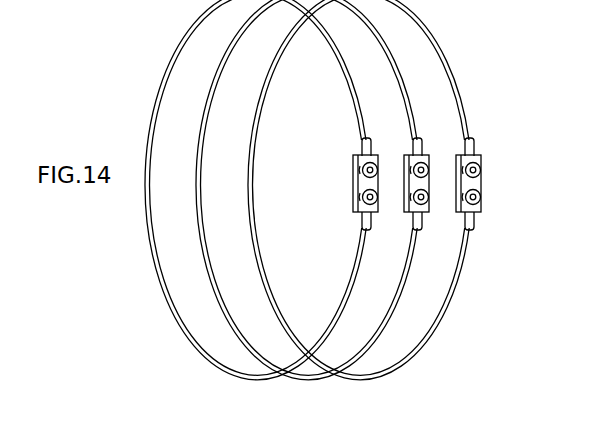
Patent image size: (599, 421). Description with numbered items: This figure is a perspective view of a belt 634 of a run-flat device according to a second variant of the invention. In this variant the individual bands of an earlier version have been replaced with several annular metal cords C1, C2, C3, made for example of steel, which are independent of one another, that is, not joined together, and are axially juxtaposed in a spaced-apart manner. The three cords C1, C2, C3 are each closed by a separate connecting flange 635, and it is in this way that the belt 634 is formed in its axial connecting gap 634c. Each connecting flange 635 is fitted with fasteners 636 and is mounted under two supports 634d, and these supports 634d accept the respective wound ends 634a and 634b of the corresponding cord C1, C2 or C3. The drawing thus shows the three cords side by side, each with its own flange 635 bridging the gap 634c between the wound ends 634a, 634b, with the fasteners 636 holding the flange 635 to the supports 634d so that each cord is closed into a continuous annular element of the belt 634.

The annular metal cord C1 is at (234, 190).
The annular metal cord C2 is at (398, 283).
The annular metal cord C3 is at (441, 292).
The belt 634 is at (160, 307).
The wound end 634a is at (364, 149).
The wound end 634b is at (373, 227).
The axial connecting gap 634c is at (384, 184).
The support 634d is at (429, 152).
The connecting flange 635 is at (353, 172).
The fastener 636 is at (354, 200).